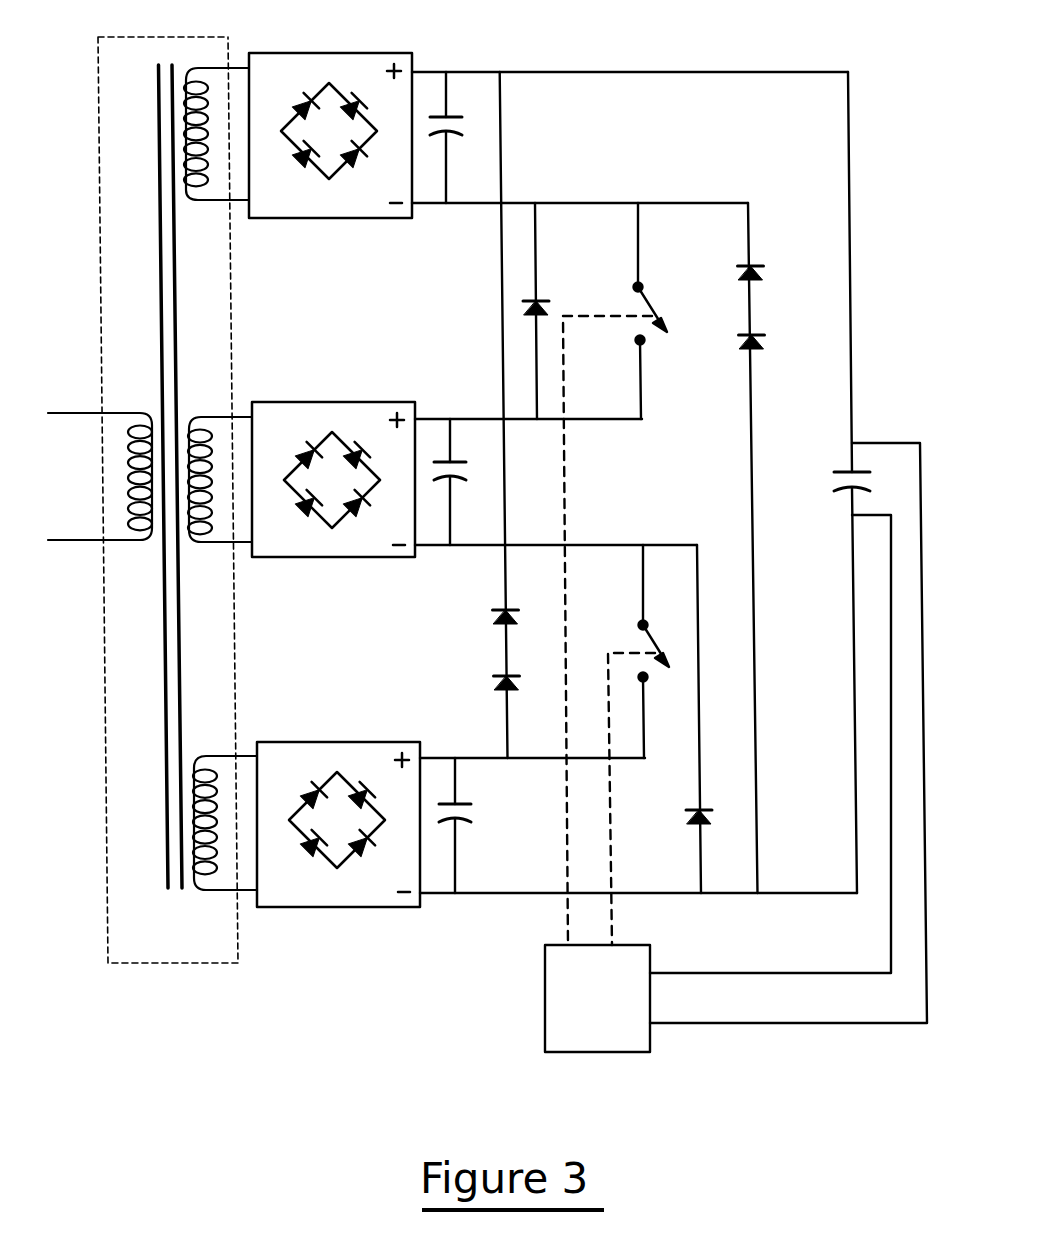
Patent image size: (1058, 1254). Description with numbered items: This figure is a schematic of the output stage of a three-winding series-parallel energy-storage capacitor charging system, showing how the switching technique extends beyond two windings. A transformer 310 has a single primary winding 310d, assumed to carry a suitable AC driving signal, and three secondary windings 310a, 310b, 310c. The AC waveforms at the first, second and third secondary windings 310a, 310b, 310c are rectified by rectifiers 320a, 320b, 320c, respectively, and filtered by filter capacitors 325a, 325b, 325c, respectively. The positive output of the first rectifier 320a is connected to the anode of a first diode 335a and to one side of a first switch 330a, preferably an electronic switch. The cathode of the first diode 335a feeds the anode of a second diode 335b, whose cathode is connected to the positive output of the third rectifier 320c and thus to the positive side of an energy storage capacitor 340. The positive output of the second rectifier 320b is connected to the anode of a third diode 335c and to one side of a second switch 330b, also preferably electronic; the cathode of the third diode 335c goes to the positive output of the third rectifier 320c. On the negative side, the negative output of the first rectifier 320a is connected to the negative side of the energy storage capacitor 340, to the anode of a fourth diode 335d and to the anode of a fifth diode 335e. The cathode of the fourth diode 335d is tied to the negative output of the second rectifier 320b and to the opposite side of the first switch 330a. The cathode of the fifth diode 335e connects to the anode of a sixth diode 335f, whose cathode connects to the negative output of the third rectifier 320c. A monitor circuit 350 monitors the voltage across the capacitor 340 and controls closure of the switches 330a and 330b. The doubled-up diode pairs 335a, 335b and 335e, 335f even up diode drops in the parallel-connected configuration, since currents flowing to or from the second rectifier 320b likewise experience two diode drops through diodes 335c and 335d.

The transformer 310 is at (183, 33).
The first secondary winding 310a is at (220, 754).
The second secondary winding 310b is at (219, 414).
The third secondary winding 310c is at (216, 66).
The primary winding 310d is at (118, 412).
The first rectifier 320a is at (355, 741).
The second rectifier 320b is at (352, 402).
The third rectifier 320c is at (345, 51).
The first filter capacitor 325a is at (460, 807).
The second filter capacitor 325b is at (452, 460).
The third filter capacitor 325c is at (456, 110).
The first switch 330a is at (648, 644).
The second switch 330b is at (645, 304).
The first diode 335a is at (496, 686).
The second diode 335b is at (496, 620).
The third diode 335c is at (523, 308).
The fourth diode 335d is at (688, 825).
The fifth diode 335e is at (765, 345).
The sixth diode 335f is at (764, 276).
The energy storage capacitor 340 is at (848, 485).
The monitor circuit 350 is at (545, 1001).